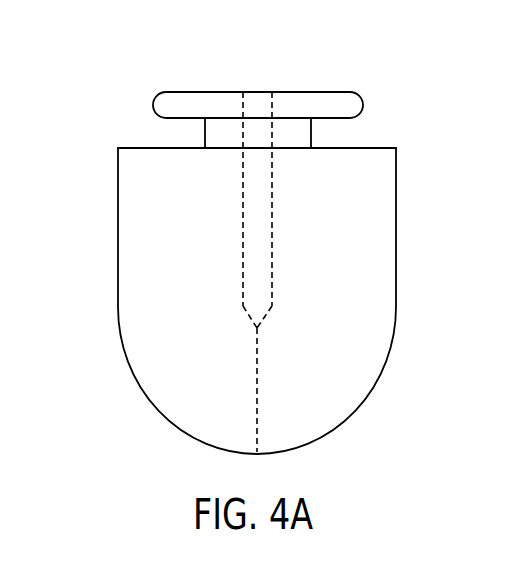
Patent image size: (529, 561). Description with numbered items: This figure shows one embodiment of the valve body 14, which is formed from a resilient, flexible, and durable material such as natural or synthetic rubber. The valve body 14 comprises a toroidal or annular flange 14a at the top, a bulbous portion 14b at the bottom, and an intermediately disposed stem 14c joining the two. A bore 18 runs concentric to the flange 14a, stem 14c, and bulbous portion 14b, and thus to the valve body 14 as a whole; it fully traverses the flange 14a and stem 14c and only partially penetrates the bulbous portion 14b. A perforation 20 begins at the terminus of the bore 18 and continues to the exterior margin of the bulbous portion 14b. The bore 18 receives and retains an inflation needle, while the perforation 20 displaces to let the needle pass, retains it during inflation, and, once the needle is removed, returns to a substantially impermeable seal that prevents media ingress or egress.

The valve body 14 is at (98, 87).
The flange 14a is at (311, 92).
The bulbous portion 14b is at (367, 395).
The stem 14c is at (311, 137).
The bore 18 is at (221, 234).
The perforation 20 is at (221, 355).